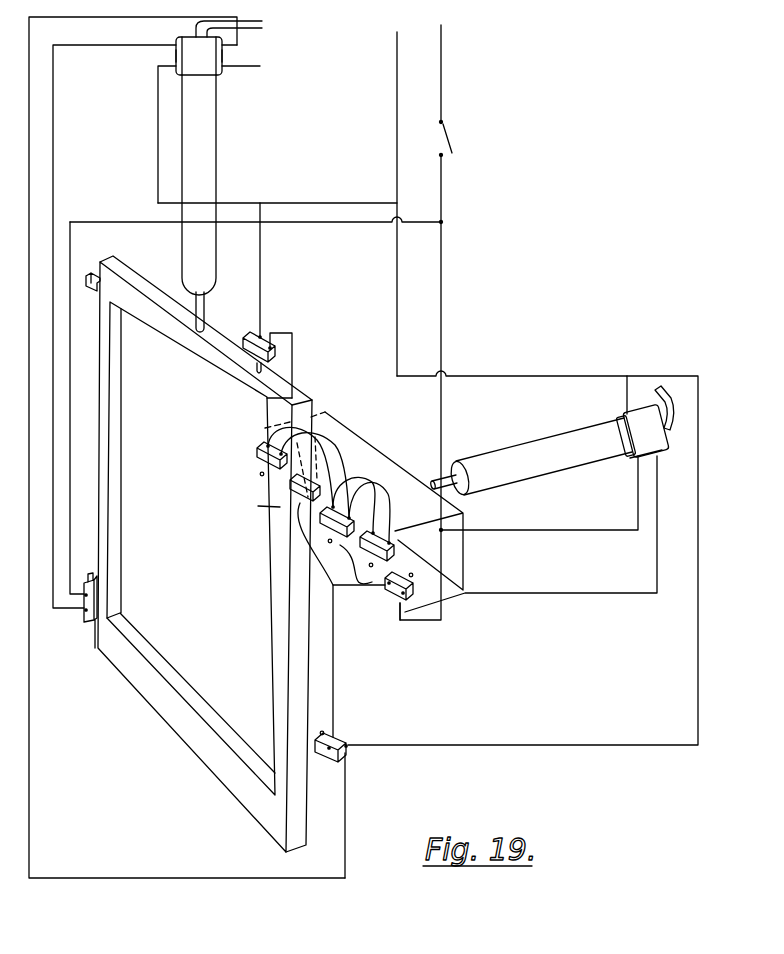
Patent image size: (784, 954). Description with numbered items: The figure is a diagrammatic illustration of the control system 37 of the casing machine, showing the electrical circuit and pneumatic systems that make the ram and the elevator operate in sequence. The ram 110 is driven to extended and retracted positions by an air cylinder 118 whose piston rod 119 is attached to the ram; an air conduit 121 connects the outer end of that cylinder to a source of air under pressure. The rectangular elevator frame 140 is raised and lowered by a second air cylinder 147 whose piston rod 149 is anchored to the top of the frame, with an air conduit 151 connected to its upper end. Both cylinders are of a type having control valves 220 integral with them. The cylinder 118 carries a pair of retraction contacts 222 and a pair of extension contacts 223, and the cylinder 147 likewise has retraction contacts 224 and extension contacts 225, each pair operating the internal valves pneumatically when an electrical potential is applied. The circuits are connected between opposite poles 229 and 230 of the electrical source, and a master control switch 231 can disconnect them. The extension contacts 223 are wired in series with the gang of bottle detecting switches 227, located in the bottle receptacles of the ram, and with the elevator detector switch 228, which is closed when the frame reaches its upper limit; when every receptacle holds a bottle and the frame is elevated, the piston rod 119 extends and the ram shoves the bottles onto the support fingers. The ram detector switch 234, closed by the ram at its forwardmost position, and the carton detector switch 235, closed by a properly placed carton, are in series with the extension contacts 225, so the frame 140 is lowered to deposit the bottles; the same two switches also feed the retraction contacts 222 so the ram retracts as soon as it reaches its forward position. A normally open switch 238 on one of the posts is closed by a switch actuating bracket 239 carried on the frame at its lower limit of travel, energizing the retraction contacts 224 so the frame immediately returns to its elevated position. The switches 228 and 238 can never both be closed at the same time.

The control system 37 is at (456, 364).
The ram 110 is at (379, 444).
The air cylinder 118 is at (524, 455).
The piston rod 119 is at (434, 478).
The air conduit 121 is at (669, 401).
The frame 140 is at (199, 379).
The air cylinder 147 is at (192, 127).
The piston rod 149 is at (199, 307).
The air conduit 151 is at (262, 25).
The control valves 220 is at (203, 64).
The electrical contacts 222 is at (637, 398).
The electrical contacts 223 is at (648, 457).
The retraction electrical contacts 224 is at (174, 54).
The extension contacts 225 is at (227, 55).
The bottle detecting switches 227 is at (305, 470).
The elevator detector switch 228 is at (262, 334).
The pole of source of electrical energy 229 is at (446, 27).
The pole of source of electrical energy 230 is at (397, 32).
The master control switch 231 is at (452, 136).
The ram detector switch 234 is at (393, 592).
The carton detector switch 235 is at (346, 740).
The switch 238 is at (83, 620).
The switch actuating bracket 239 is at (91, 274).